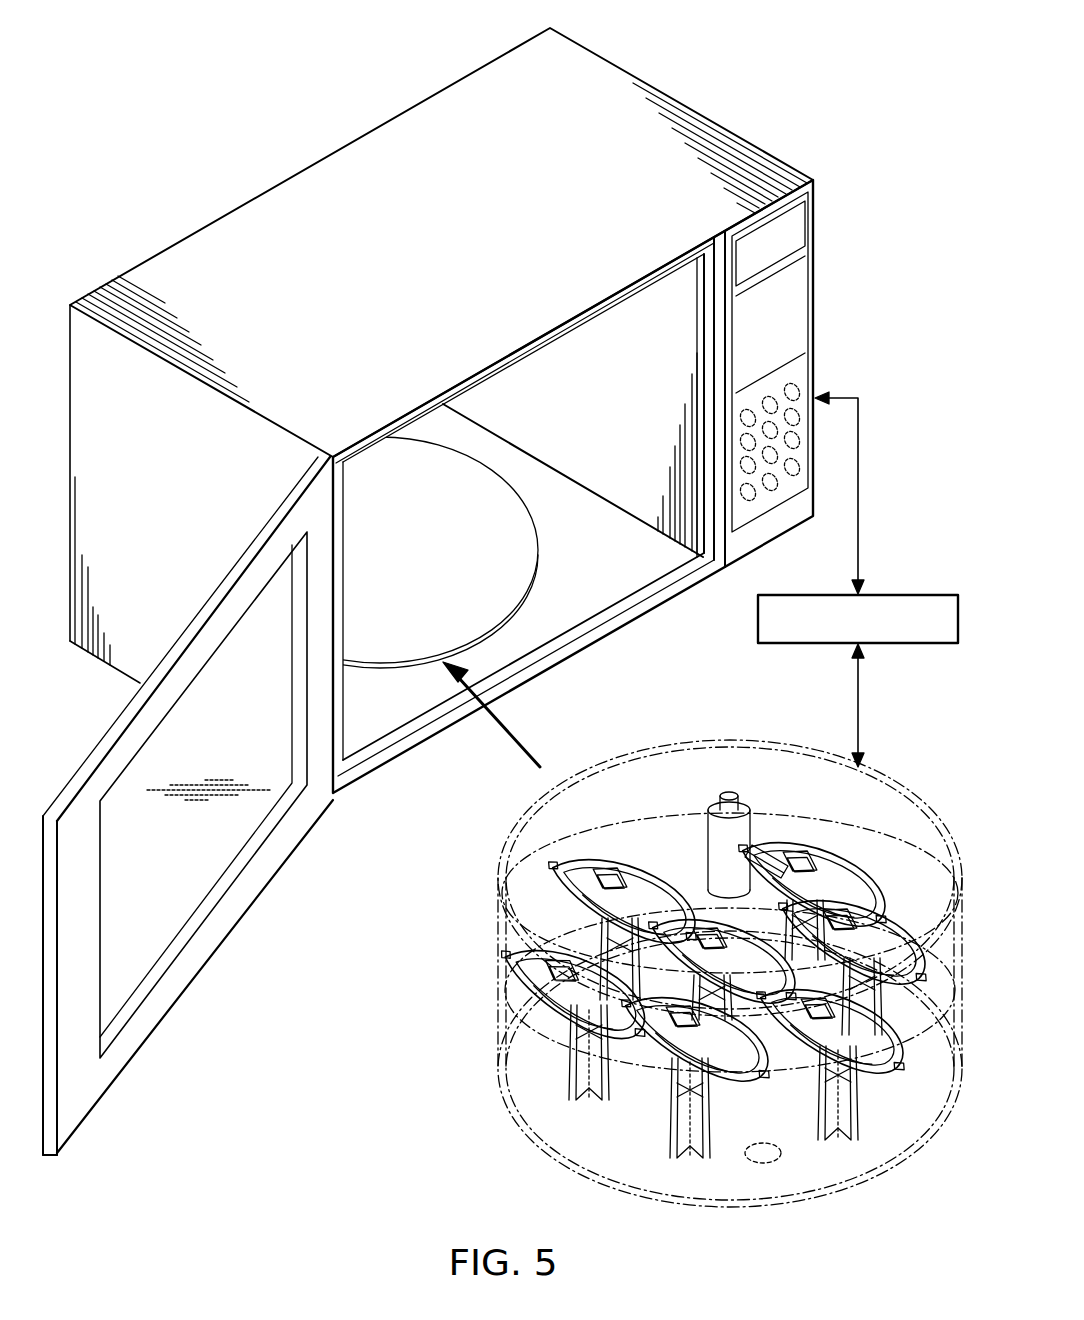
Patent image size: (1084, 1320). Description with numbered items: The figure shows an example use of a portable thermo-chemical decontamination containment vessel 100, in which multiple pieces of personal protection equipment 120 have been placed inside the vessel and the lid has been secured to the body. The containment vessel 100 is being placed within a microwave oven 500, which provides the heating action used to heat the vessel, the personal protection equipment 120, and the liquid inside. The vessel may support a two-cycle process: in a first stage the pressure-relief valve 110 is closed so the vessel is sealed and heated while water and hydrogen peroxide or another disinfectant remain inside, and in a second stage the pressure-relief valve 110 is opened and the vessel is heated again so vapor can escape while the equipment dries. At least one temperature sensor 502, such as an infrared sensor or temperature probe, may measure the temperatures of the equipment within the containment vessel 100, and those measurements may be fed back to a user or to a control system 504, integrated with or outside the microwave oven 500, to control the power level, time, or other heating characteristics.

The microwave oven 500 is at (322, 158).
The control system 504 is at (758, 618).
The portable thermo-chemical decontamination containment vessel 100 is at (632, 732).
The pressure-relief valve 110 is at (692, 834).
The personal protection equipment 120 is at (858, 905).
The temperature sensor 502 is at (778, 1148).